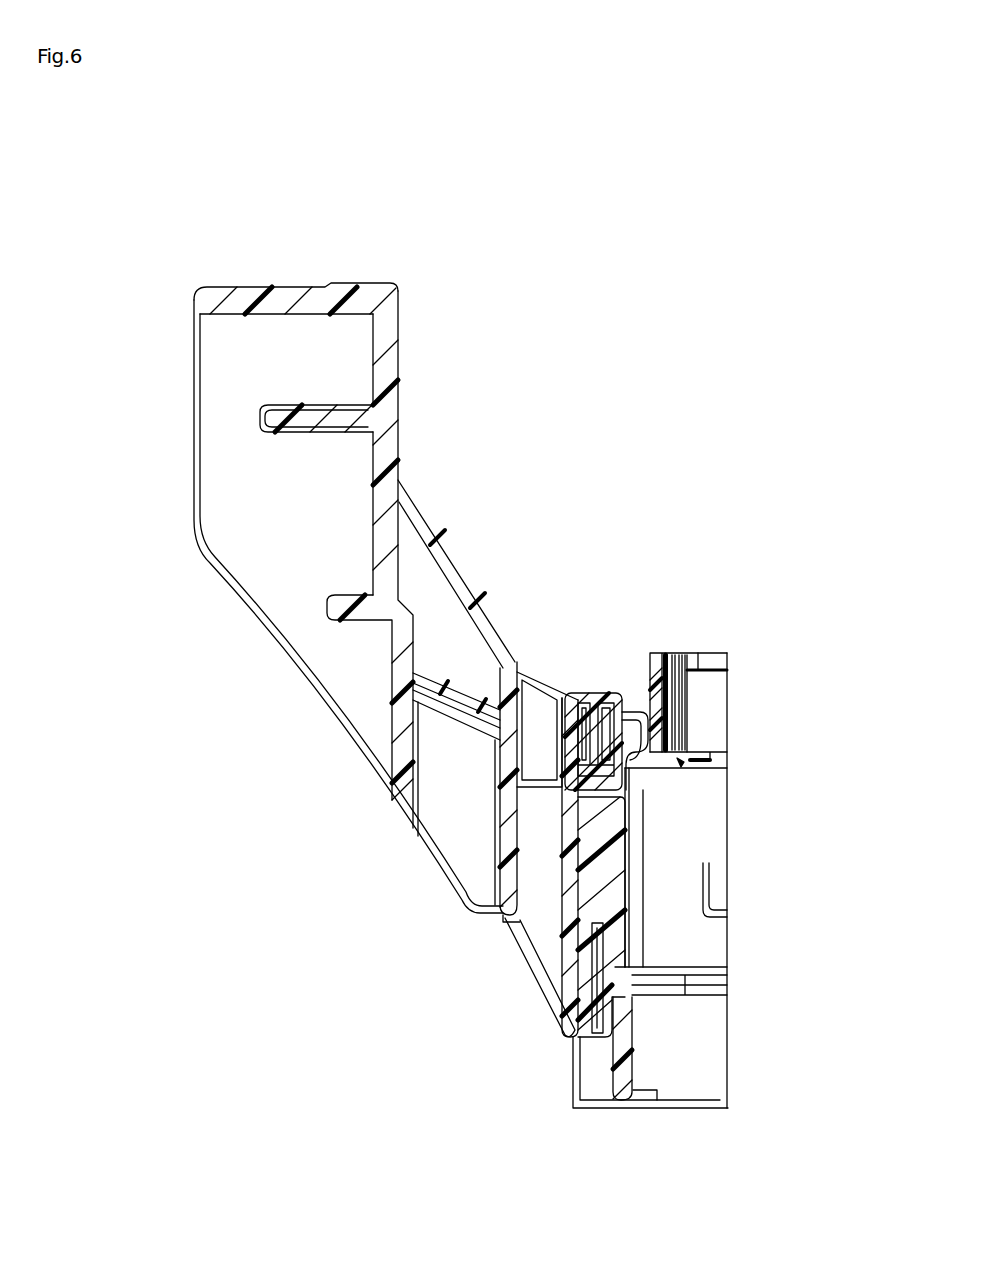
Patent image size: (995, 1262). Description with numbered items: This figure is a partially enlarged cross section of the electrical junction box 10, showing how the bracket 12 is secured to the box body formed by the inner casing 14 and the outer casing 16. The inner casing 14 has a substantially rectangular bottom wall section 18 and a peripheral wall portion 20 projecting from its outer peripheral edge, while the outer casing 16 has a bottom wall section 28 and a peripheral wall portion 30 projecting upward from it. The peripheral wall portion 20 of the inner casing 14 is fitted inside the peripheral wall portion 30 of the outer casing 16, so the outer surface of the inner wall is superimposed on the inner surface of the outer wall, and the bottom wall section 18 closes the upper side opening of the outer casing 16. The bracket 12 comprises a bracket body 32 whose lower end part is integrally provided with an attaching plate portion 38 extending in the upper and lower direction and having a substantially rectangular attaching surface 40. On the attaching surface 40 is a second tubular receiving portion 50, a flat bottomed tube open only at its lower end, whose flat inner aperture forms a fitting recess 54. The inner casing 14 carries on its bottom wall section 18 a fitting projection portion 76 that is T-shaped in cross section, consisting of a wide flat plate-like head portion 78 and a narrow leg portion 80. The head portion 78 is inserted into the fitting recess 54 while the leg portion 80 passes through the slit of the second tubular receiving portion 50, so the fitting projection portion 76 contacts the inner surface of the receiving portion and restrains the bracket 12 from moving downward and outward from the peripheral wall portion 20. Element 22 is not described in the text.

The electrical junction box 10 is at (728, 639).
The bracket 12 is at (313, 247).
The inner casing 14 is at (681, 762).
The outer casing 16 is at (628, 913).
The bottom wall section 18 is at (705, 755).
The peripheral wall portion 20 is at (632, 820).
The panel edge portion 22 is at (656, 655).
The bottom wall section 28 is at (700, 975).
The peripheral wall portion 30 is at (630, 942).
The bracket body 32 is at (240, 291).
The attaching plate portion 38 is at (572, 928).
The attaching surface 40 is at (585, 970).
The second tubular receiving portion 50 is at (598, 693).
The fitting recess 54 is at (608, 715).
The fitting projection portion 76 is at (832, 628).
The head portion 78 is at (650, 745).
The leg portion 80 is at (650, 722).